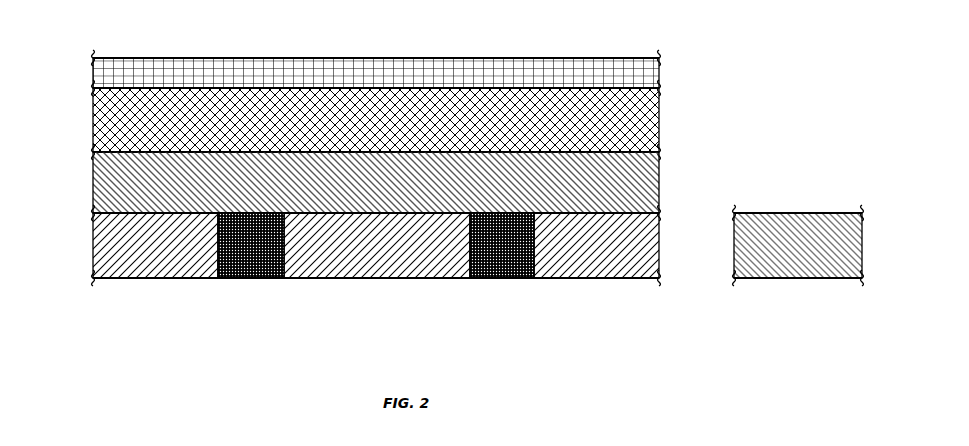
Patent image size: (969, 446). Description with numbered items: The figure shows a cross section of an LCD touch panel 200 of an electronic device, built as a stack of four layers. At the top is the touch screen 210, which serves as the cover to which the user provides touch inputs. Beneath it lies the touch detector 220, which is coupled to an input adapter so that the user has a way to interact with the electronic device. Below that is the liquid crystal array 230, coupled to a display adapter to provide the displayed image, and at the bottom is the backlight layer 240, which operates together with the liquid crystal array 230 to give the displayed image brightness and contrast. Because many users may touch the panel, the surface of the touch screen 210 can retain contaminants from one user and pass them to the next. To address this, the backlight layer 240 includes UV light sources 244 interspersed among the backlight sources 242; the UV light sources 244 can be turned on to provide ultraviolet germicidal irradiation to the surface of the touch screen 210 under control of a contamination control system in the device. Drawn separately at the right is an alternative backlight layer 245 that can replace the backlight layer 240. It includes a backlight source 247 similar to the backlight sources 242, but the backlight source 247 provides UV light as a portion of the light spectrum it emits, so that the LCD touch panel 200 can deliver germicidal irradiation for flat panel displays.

The LCD touch panel 200 is at (351, 206).
The touch screen 210 is at (94, 72).
The touch detector 220 is at (94, 124).
The liquid crystal array 230 is at (94, 188).
The backlight layer 240 is at (351, 262).
The backlight sources 242 is at (155, 279).
The UV light sources 244 is at (235, 279).
The backlight layer 245 is at (734, 246).
The backlight source 247 is at (785, 279).